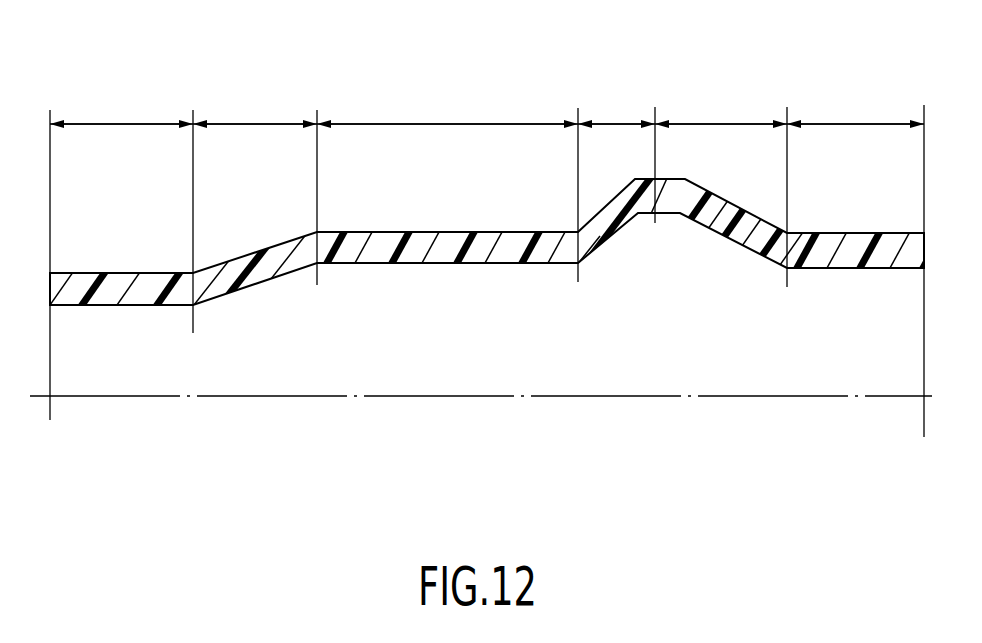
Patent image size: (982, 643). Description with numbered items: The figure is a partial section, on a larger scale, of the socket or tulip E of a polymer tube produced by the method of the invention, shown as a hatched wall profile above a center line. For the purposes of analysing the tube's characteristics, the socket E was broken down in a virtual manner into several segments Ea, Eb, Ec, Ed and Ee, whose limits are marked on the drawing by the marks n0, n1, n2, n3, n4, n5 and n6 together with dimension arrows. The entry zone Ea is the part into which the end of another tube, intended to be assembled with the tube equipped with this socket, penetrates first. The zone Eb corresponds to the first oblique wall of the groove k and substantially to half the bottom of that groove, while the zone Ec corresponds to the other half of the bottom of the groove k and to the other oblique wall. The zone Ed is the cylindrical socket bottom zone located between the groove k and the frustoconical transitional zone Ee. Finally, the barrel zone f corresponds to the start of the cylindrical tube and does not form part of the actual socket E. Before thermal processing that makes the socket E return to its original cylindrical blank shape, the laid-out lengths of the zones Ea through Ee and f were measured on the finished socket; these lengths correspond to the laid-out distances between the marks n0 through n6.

The socket E is at (514, 100).
The mark n0 is at (924, 233).
The mark n1 is at (787, 233).
The mark n2 is at (660, 179).
The mark n3 is at (578, 232).
The mark n4 is at (317, 232).
The mark n5 is at (193, 273).
The mark n6 is at (50, 273).
The groove k is at (648, 218).
The barrel zone f is at (121, 107).
The entry zone Ea is at (855, 107).
The first oblique wall zone Eb is at (721, 107).
The second groove zone Ec is at (616, 107).
The cylindrical socket bottom zone Ed is at (447, 107).
The frustoconical transitional zone Ee is at (255, 107).